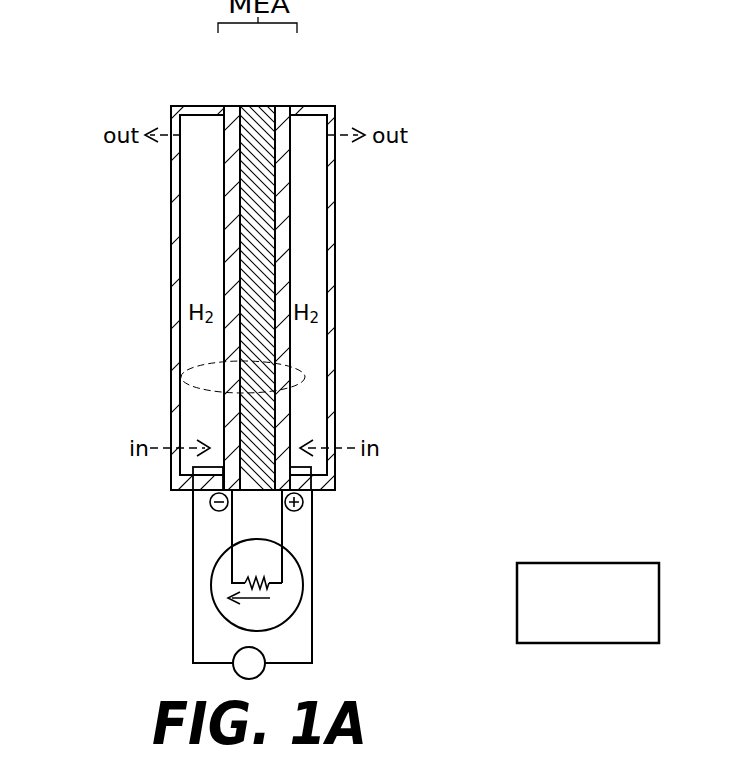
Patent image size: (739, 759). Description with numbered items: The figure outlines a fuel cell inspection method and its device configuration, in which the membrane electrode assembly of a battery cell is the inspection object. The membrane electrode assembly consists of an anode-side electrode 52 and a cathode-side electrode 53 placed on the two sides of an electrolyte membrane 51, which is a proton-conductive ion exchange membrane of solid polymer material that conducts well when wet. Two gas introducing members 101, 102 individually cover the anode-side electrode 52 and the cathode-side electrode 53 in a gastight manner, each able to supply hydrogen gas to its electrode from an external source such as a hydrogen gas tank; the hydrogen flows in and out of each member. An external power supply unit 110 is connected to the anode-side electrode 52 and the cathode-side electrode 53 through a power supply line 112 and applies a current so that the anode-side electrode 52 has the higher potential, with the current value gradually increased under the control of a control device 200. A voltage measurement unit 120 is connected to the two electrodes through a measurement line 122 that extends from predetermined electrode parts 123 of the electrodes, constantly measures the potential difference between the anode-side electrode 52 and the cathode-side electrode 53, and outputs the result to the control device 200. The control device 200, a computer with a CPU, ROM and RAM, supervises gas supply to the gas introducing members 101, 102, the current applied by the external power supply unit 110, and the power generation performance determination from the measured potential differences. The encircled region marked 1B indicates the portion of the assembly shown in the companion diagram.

The gas introducing member 101 is at (183, 108).
The gas introducing member 102 is at (333, 107).
The electrolyte membrane 51 is at (257, 107).
The anode-side electrode 52 is at (232, 107).
The cathode-side electrode 53 is at (283, 107).
The cross-section region shown in FIG. 1B is at (213, 370).
The electrode parts 123 is at (295, 462).
The power supply line 112 is at (282, 532).
The external power supply unit 110 is at (302, 570).
The measurement line 122 is at (312, 603).
The voltage measurement unit 120 is at (263, 652).
The control device 200 is at (582, 563).